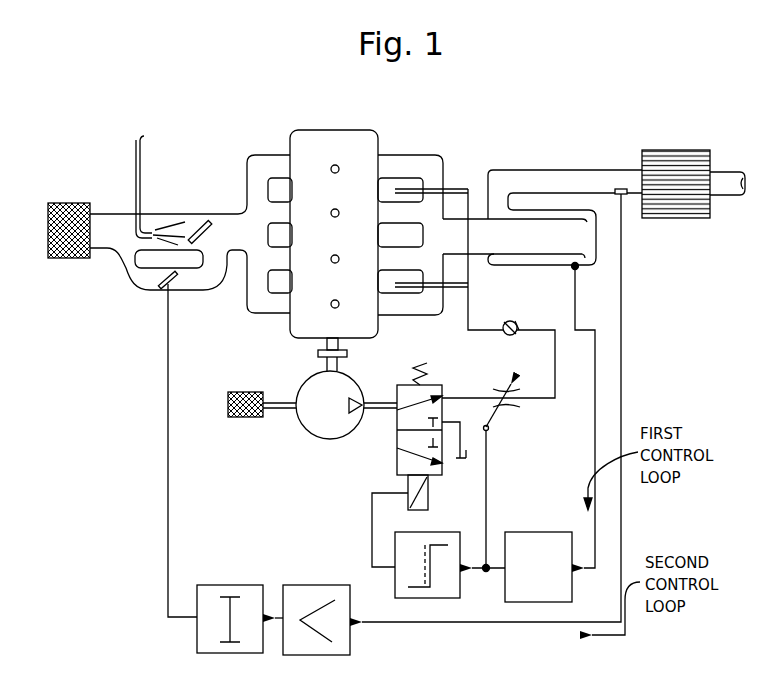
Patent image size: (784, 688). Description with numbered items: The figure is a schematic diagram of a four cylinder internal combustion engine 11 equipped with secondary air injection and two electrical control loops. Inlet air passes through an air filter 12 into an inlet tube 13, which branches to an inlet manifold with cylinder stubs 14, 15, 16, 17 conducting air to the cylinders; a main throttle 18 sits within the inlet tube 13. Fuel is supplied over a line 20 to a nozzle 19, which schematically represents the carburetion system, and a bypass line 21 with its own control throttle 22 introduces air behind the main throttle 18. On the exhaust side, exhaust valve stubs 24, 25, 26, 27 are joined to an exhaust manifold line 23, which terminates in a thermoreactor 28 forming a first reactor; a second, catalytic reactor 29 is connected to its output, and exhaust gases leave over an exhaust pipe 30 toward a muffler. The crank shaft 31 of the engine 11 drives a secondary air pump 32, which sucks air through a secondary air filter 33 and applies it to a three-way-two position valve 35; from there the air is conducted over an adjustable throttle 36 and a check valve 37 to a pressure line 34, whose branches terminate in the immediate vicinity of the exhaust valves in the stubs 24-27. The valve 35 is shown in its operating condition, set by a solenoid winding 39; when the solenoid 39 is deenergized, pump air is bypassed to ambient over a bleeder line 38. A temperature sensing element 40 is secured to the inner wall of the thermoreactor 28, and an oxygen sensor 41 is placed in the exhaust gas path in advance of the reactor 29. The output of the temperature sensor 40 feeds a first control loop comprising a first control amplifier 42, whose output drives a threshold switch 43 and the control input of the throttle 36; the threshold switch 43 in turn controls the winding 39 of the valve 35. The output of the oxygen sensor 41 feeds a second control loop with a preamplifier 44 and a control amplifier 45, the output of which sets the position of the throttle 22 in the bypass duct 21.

The internal combustion engine 11 is at (348, 142).
The air filter 12 is at (55, 206).
The inlet tube 13 is at (113, 217).
The cylinder stub 14 is at (278, 162).
The cylinder stub 15 is at (280, 210).
The cylinder stub 16 is at (283, 257).
The cylinder stub 17 is at (278, 303).
The throttle 18 is at (208, 218).
The nozzle 19 is at (147, 230).
The fuel line 20 is at (137, 152).
The bypass line 21 is at (145, 280).
The control throttle 22 is at (173, 284).
The exhaust manifold line 23 is at (504, 246).
The exhaust valve stub 24 is at (393, 165).
The exhaust valve stub 25 is at (385, 213).
The exhaust valve stub 26 is at (410, 258).
The exhaust valve stub 27 is at (397, 307).
The thermoreactor 28 is at (600, 257).
The second reactor 29 is at (655, 160).
The exhaust pipe 30 is at (723, 177).
The crank shaft 31 is at (343, 346).
The secondary air pump 32 is at (320, 432).
The secondary air filter 33 is at (243, 418).
The pressure line 34 is at (468, 309).
The three-way-two position valve 35 is at (435, 385).
The adjustable throttle 36 is at (508, 415).
The check valve 37 is at (505, 333).
The bleeder line 38 is at (462, 453).
The solenoid winding 39 is at (428, 502).
The temperature sensing element 40 is at (568, 268).
The oxygen sensor 41 is at (624, 196).
The first control amplifier 42 is at (540, 541).
The threshold switch 43 is at (450, 595).
The preamplifier 44 is at (311, 590).
The control amplifier 45 is at (218, 590).